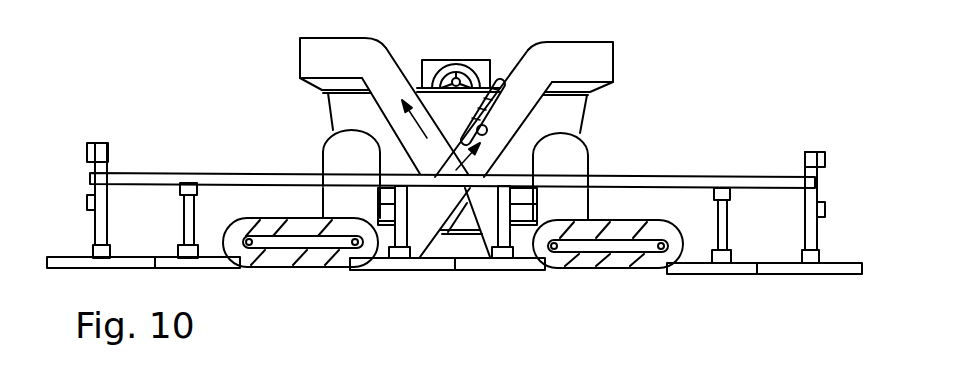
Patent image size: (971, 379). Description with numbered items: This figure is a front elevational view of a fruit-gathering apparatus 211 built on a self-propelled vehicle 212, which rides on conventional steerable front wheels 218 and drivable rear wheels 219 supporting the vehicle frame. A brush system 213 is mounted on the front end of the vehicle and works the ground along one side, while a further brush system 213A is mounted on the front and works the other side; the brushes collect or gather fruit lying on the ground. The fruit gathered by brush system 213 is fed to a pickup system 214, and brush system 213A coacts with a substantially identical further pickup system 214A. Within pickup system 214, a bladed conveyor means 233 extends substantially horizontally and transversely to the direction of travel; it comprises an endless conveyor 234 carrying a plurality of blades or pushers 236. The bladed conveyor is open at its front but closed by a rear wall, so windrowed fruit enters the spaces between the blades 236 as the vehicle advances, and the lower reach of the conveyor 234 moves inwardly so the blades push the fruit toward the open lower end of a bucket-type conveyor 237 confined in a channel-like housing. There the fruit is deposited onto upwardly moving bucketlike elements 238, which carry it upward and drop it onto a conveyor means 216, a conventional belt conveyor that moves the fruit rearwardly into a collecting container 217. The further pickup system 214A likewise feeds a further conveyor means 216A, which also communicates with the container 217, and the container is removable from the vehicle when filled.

The apparatus 211 is at (276, 80).
The self-propelled vehicle 212 is at (314, 155).
The brush system 213 is at (198, 270).
The further brush system 213A is at (773, 280).
The pickup system 214 is at (521, 50).
The further pickup system 214A is at (399, 51).
The conveyor means 216 is at (595, 50).
The further conveyor means 216A is at (317, 48).
The container 217 is at (566, 108).
The steerable front wheels 218 is at (566, 209).
The drivable rear wheels 219 is at (575, 150).
The bladed conveyor means 233 is at (269, 270).
The endless conveyor 234 is at (273, 233).
The blades or pushers 236 is at (303, 262).
The bucket-type conveyor 237 is at (494, 126).
The bucketlike elements 238 is at (476, 129).